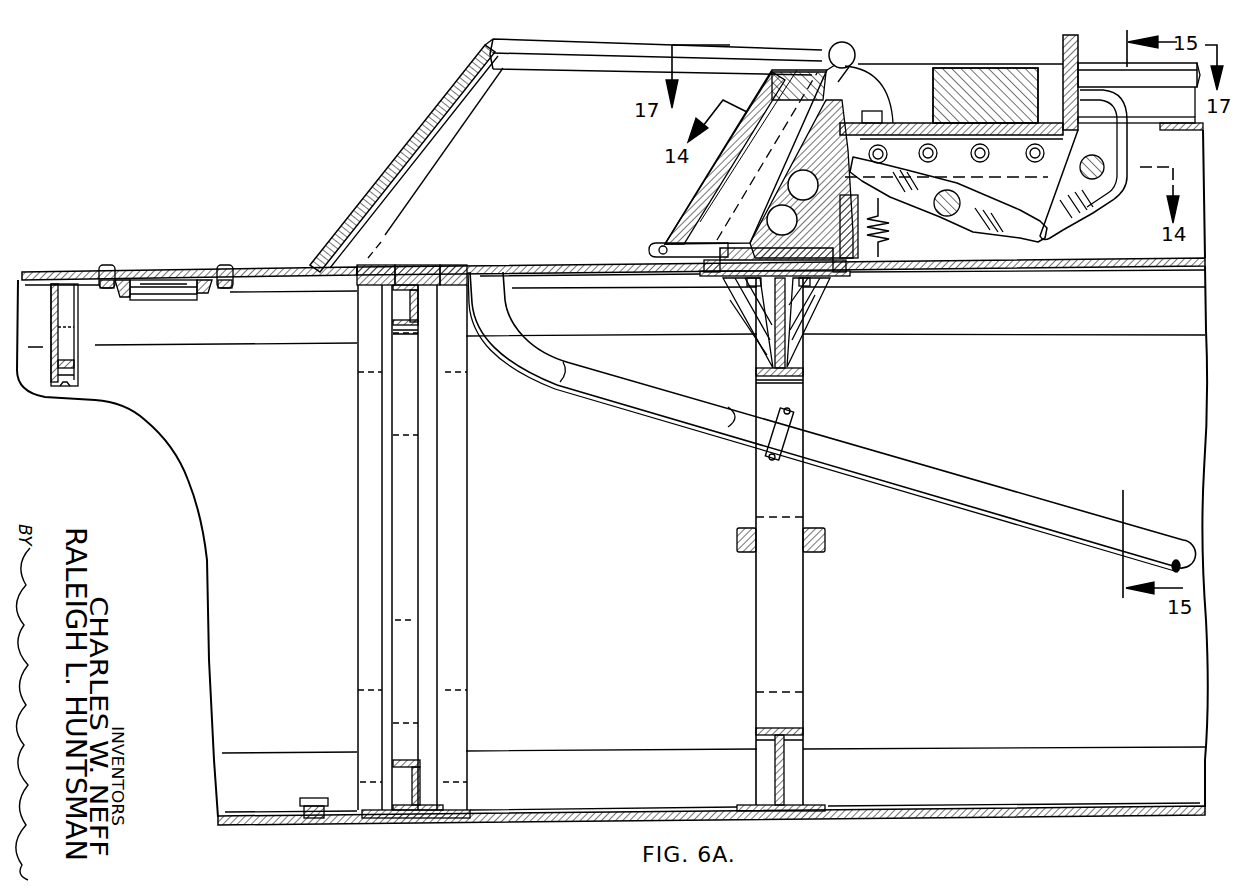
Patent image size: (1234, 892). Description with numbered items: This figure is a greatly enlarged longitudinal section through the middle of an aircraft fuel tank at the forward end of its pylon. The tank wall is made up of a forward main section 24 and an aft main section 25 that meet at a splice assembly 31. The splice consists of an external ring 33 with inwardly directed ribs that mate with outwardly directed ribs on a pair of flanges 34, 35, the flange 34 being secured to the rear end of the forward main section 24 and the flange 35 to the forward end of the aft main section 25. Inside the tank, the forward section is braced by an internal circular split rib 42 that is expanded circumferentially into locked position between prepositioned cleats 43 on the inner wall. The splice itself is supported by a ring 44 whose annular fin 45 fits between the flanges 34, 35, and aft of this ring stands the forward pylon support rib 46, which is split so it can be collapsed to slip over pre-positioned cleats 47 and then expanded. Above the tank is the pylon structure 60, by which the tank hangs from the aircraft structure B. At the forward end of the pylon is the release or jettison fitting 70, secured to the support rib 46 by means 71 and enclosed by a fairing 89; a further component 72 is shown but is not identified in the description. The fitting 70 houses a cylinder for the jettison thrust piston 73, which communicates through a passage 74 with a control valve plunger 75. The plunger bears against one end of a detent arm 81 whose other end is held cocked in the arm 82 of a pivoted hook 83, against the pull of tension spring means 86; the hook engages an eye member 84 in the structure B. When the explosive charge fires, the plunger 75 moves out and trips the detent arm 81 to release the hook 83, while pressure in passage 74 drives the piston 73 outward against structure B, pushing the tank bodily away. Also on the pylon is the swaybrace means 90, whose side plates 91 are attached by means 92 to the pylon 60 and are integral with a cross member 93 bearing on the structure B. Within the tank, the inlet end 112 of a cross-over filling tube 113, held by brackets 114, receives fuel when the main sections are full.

The forward main section 24 is at (264, 260).
The aft main section 25 is at (563, 259).
The splice assembly 31 is at (418, 258).
The external ring 33 is at (383, 265).
The flange 34 is at (358, 292).
The flange 35 is at (462, 265).
The internal circular split rib 42 is at (78, 371).
The cleats 43 is at (88, 276).
The ring 44 is at (458, 582).
The annular fin 45 is at (405, 826).
The forward pylon support rib 46 is at (792, 599).
The cleats 47 is at (708, 274).
The pylon structure 60 is at (427, 110).
The release or jettison fitting 70 is at (680, 200).
The securing means 71 is at (778, 288).
The plate 72 is at (900, 123).
The jettison thrust piston 73 is at (713, 177).
The passage 74 is at (727, 241).
The control valve plunger 75 is at (889, 158).
The detent arm 81 is at (970, 227).
The arm 82 is at (1065, 226).
The pivoted hook 83 is at (1127, 148).
The eye member 84 is at (1078, 132).
The tension spring means 86 is at (890, 231).
The fairing 89 is at (410, 143).
The swaybrace means 90 is at (955, 46).
The side plates 91 is at (1003, 178).
The attaching means 92 is at (987, 155).
The cross member 93 is at (968, 82).
The inlet end 112 is at (506, 312).
The cross-over filling tube 113 is at (973, 480).
The brackets 114 is at (762, 450).
The aircraft structure B is at (752, 54).